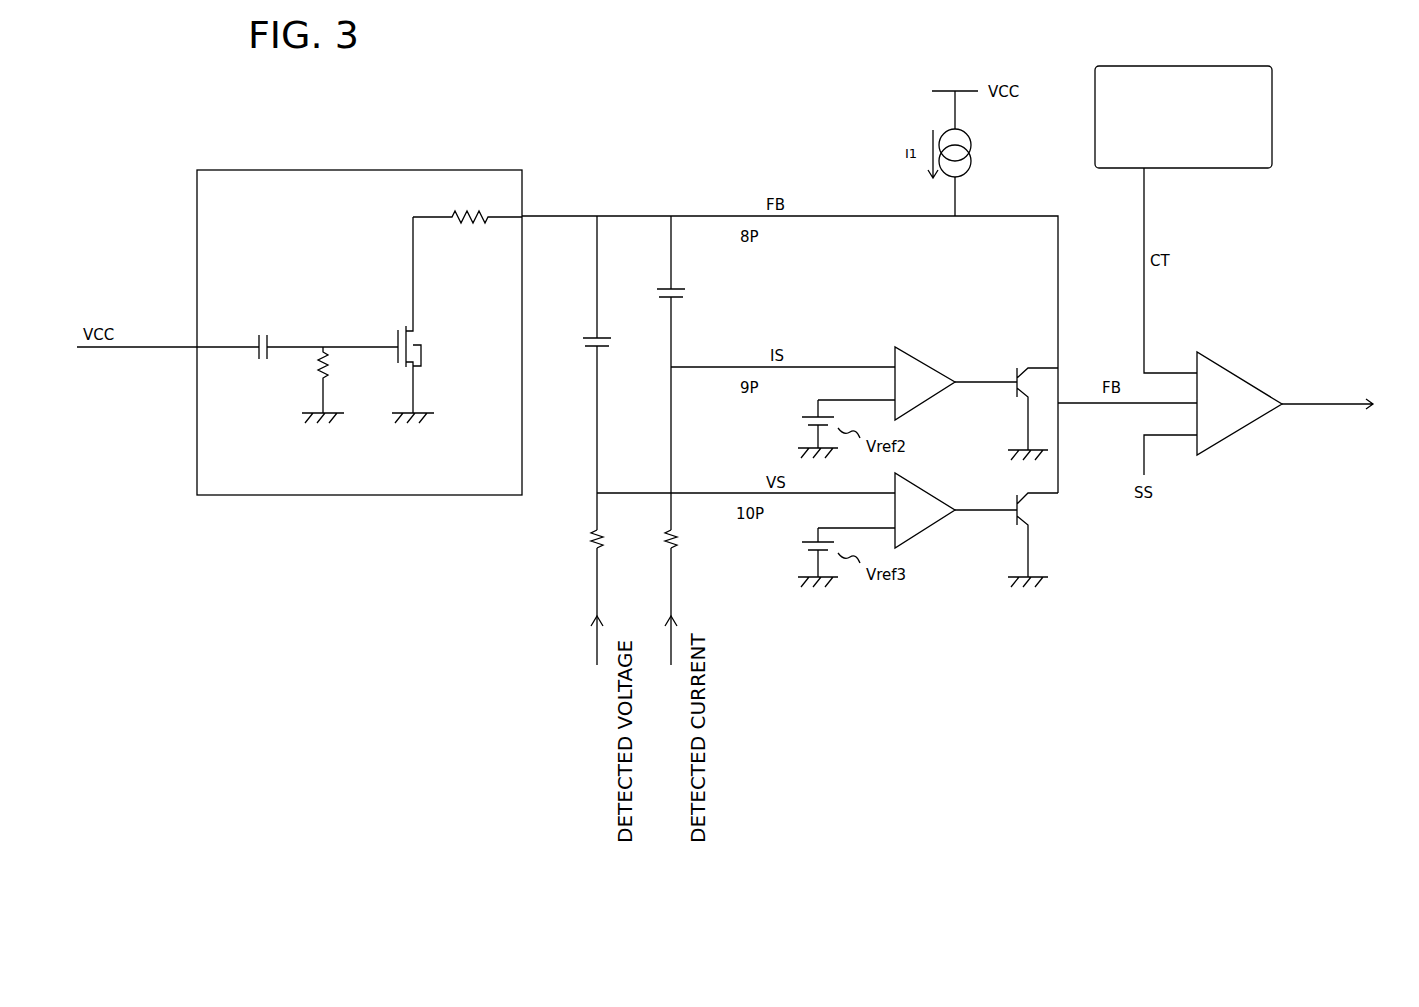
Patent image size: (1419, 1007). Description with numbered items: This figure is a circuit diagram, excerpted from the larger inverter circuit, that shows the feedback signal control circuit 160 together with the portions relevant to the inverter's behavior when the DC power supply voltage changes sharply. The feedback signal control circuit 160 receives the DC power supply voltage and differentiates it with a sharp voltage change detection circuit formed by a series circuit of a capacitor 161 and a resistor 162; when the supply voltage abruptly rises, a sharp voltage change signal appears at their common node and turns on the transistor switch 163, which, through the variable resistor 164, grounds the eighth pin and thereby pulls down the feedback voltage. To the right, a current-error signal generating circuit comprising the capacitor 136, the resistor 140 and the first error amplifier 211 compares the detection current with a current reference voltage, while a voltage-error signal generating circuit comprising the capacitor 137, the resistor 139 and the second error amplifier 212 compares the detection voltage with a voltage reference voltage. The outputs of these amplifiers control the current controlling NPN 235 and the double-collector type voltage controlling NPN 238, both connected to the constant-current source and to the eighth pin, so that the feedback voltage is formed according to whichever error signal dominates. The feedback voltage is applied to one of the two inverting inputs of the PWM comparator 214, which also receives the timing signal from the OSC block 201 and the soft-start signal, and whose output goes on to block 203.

The feedback signal control circuit 160 is at (334, 166).
The capacitor 161 is at (258, 326).
The resistor 162 is at (312, 384).
The transistor switch 163 is at (388, 325).
The variable resistor 164 is at (468, 238).
The capacitor 136 is at (690, 294).
The capacitor 137 is at (615, 343).
The resistor 139 is at (616, 542).
The resistor 140 is at (691, 542).
The first error amplifier 211 is at (920, 352).
The second error amplifier 212 is at (922, 482).
The NPN 235 is at (1017, 362).
The double-collector type NPN 238 is at (1033, 512).
The OSC block 201 is at (1280, 122).
The PWM comparator 214 is at (1248, 372).
The output destination 203 is at (1335, 392).